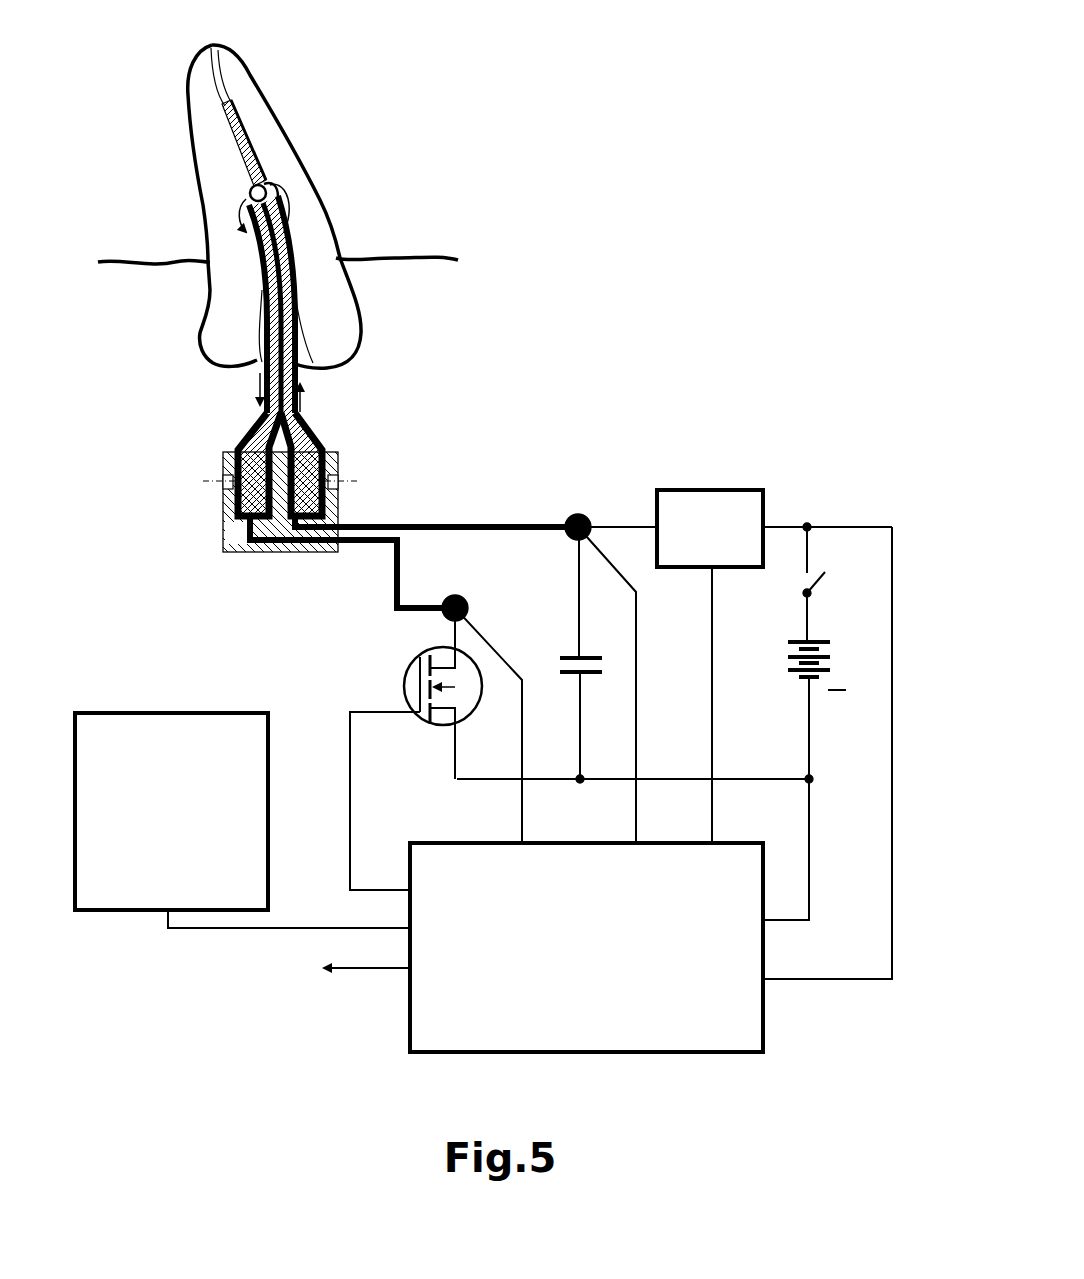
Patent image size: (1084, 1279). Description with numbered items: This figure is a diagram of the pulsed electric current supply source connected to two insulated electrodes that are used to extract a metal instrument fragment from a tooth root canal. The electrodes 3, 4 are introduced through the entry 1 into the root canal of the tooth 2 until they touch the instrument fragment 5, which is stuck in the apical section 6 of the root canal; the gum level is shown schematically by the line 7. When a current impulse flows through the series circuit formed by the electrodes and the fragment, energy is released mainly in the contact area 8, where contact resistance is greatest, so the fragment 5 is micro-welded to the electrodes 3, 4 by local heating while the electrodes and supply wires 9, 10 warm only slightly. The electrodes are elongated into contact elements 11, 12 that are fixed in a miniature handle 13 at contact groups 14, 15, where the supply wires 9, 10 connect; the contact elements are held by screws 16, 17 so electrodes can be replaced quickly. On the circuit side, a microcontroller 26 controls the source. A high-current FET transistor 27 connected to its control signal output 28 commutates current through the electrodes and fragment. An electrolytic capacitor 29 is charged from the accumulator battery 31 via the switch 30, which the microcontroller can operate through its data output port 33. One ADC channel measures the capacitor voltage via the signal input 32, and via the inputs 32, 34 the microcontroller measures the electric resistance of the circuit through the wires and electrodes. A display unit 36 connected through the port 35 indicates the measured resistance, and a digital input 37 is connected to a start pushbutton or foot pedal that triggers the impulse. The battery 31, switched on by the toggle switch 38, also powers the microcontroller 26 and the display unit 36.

The entry of the root canal 1 is at (303, 352).
The tooth 2 is at (274, 206).
The first insulated electrode 3 is at (268, 283).
The second insulated electrode 4 is at (293, 283).
The instrument fragment 5 is at (249, 163).
The apical section of the root canal 6 is at (220, 78).
The gum level line 7 is at (280, 245).
The contact area 8 is at (252, 190).
The first supply wire 9 is at (380, 555).
The second supply wire 10 is at (480, 516).
The first contact element 11 is at (247, 452).
The second contact element 12 is at (318, 452).
The miniature handle 13 is at (235, 537).
The first contact group 14 is at (247, 532).
The second contact group 15 is at (302, 532).
The first screw 16 is at (232, 480).
The second screw 17 is at (330, 480).
The microcontroller 26 is at (651, 810).
The FET transistor 27 is at (582, 695).
The control signal output 28 is at (406, 809).
The electrolytic capacitor 29 is at (574, 655).
The switch 30 is at (735, 506).
The accumulator battery 31 is at (794, 686).
The signal input 32 is at (615, 706).
The data output port 33 is at (712, 726).
The measurement input 34 is at (497, 747).
The display port 35 is at (315, 928).
The display unit 36 is at (171, 811).
The digital input 37 is at (357, 982).
The toggle switch 38 is at (833, 560).